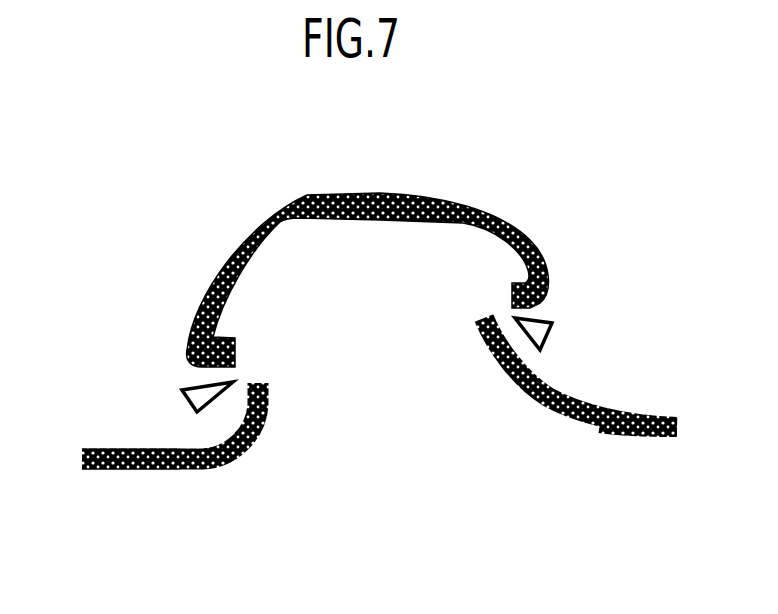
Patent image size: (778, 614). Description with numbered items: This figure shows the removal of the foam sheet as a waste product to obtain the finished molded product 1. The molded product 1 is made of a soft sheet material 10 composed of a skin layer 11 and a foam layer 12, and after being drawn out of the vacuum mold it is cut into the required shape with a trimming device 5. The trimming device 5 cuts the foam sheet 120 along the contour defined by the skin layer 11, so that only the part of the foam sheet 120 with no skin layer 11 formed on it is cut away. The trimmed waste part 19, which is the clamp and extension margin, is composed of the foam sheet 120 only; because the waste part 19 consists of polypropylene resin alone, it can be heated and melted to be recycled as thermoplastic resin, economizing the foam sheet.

The molded product 1 is at (368, 233).
The skin layer 11 is at (437, 193).
The foam layer 12 is at (343, 213).
The soft sheet material 10 is at (418, 247).
The trimming device 5 is at (197, 382).
The waste part 19 is at (240, 470).
The foam sheet 120 is at (123, 472).